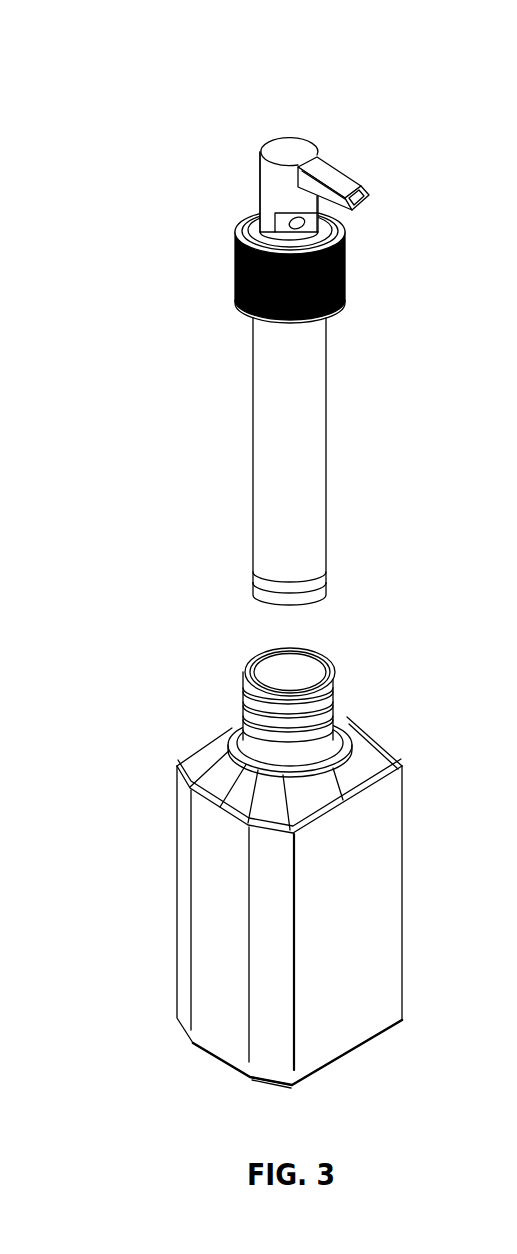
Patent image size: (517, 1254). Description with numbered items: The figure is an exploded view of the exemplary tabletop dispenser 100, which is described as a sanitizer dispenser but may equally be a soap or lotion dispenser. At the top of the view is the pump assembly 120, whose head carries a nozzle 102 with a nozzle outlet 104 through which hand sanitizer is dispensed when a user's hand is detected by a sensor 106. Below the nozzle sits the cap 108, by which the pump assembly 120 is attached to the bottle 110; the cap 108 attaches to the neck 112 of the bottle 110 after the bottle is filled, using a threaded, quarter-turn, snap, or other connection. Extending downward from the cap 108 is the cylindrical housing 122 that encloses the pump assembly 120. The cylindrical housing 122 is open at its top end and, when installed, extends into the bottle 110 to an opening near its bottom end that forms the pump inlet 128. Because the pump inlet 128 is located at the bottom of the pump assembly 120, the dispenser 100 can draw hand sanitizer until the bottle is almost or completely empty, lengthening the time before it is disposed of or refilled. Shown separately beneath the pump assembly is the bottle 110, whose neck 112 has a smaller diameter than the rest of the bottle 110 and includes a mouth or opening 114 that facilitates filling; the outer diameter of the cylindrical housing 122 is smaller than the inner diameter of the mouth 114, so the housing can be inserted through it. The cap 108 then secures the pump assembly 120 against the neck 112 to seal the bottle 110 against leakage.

The tabletop dispenser 100 is at (103, 103).
The nozzle 102 is at (333, 170).
The nozzle outlet 104 is at (385, 207).
The sensor 106 is at (283, 203).
The cap 108 is at (236, 270).
The bottle 110 is at (207, 952).
The neck 112 is at (247, 706).
The mouth or opening 114 is at (330, 658).
The pump assembly 120 is at (170, 386).
The cylindrical housing 122 is at (313, 448).
The pump inlet 128 is at (343, 603).